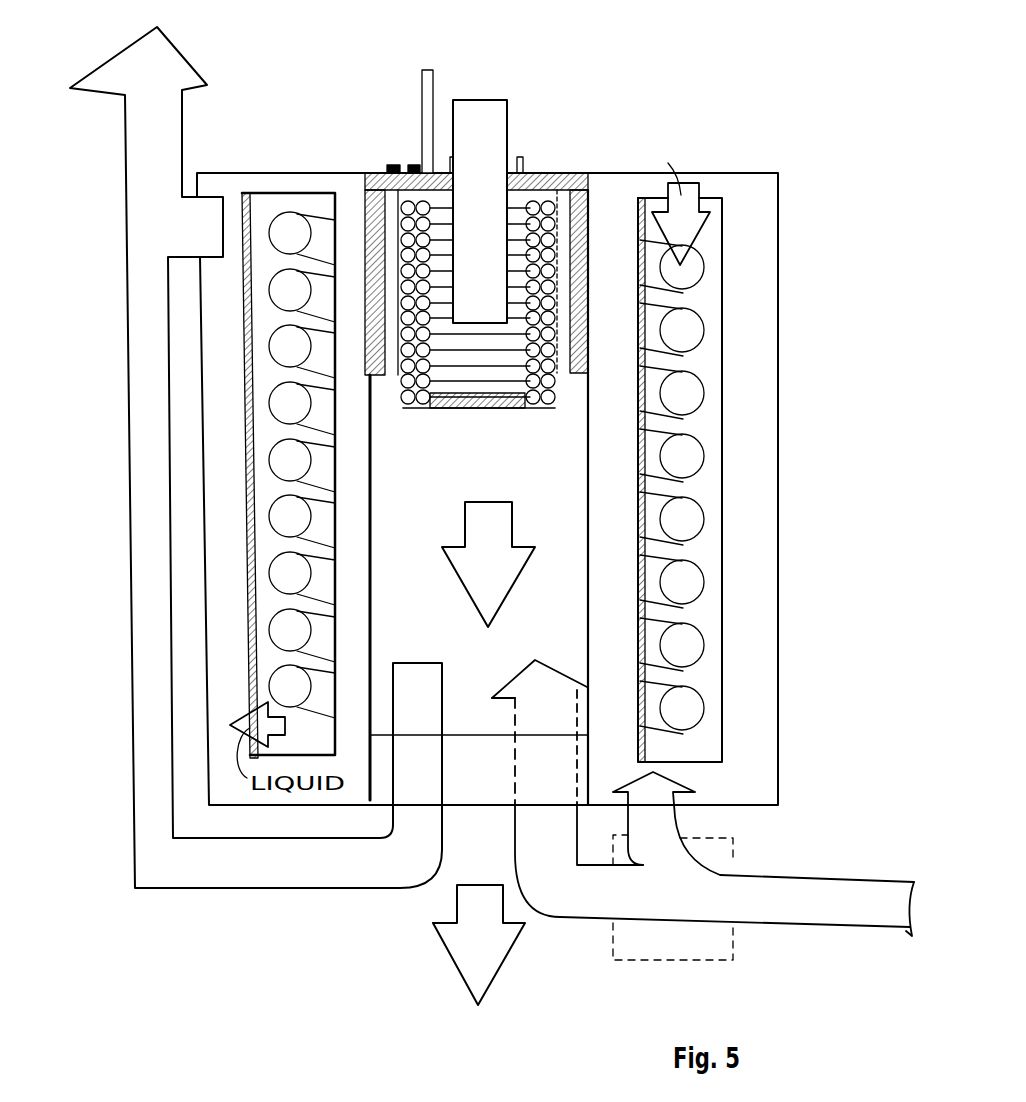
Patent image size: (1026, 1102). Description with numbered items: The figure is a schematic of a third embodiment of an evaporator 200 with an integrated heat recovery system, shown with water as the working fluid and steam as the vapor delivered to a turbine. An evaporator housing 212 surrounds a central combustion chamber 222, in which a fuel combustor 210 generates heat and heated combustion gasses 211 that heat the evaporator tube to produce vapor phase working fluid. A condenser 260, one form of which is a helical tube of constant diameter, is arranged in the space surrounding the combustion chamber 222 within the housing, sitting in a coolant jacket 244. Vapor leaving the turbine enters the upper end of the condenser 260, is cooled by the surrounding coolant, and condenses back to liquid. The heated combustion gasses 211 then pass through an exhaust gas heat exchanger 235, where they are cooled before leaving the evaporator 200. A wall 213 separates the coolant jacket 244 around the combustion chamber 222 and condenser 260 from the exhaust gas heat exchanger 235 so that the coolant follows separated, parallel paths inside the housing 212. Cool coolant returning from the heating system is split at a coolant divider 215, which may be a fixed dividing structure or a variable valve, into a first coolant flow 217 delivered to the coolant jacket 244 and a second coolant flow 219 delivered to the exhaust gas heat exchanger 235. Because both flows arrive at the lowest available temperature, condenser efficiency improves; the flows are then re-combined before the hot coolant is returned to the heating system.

The evaporator 200 is at (310, 128).
The fuel combustor 210 is at (503, 113).
The heated combustion gasses 211 is at (500, 584).
The evaporator housing 212 is at (778, 203).
The wall 213 is at (587, 457).
The coolant divider 215 is at (718, 945).
The first coolant flow 217 is at (662, 822).
The second coolant flow 219 is at (537, 842).
The combustion chamber 222 is at (560, 197).
The exhaust gas heat exchanger 235 is at (503, 460).
The coolant jacket 244 is at (748, 277).
The condenser 260 is at (280, 457).